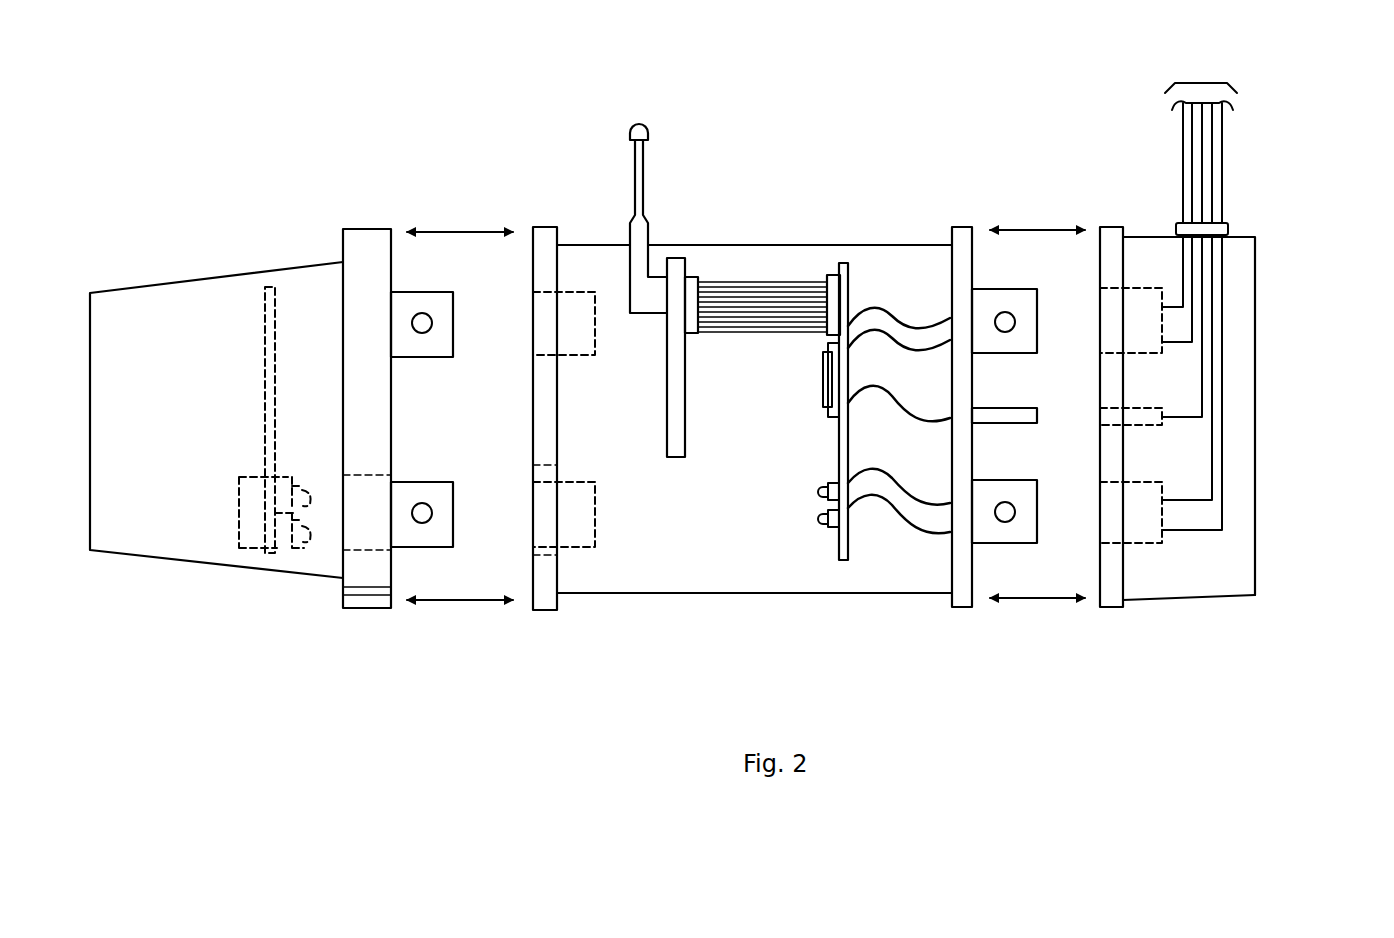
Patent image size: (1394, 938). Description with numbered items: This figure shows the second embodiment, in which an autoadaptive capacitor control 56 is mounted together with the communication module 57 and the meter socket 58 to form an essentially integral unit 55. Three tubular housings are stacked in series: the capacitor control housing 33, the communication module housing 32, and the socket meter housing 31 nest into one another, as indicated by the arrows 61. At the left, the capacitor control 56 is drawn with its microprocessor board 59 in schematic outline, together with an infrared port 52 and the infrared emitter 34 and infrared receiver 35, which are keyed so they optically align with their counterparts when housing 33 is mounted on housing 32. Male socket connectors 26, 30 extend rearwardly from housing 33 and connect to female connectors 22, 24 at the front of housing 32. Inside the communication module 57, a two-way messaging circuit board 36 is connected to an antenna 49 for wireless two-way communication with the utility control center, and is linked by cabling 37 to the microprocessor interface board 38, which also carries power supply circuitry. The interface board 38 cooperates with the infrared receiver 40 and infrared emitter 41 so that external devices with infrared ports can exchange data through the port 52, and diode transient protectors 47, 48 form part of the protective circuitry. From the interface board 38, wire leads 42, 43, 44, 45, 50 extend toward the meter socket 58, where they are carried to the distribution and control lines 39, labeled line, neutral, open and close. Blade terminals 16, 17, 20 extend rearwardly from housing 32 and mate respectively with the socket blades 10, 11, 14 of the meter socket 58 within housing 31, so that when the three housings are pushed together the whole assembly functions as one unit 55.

The socket blade 10 is at (1138, 292).
The socket blade 11 is at (1132, 427).
The socket blade 14 is at (1140, 543).
The blade terminal 16 is at (998, 290).
The blade terminal 17 is at (1015, 408).
The blade terminal 20 is at (998, 480).
The female connector 22 is at (570, 356).
The female connector 24 is at (570, 482).
The male socket connector 26 is at (415, 292).
The male socket connector 30 is at (415, 482).
The tubular housing 31 is at (1258, 573).
The tubular housing 32 is at (767, 245).
The tubular housing 33 is at (367, 228).
The infrared emitter 34 is at (297, 485).
The infrared receiver 35 is at (300, 542).
The two-way messaging circuit board 36 is at (685, 400).
The cabling 37 is at (758, 280).
The interface board 38 is at (848, 432).
The distribution lines and control lines 39 is at (1202, 82).
The infrared receiver 40 is at (820, 490).
The infrared emitter 41 is at (820, 517).
The wire lead 42 is at (910, 350).
The wire lead 43 is at (902, 315).
The wire lead 44 is at (912, 535).
The wire lead 45 is at (903, 488).
The diode transient protector 47 is at (823, 390).
The diode transient protector 48 is at (826, 367).
The antenna 49 is at (643, 182).
The wire lead 50 is at (908, 405).
The infrared port 52 is at (239, 492).
The integral unit 55 is at (697, 238).
The autoadaptive capacitor control 56 is at (205, 562).
The communication module 57 is at (732, 593).
The meter socket 58 is at (1178, 600).
The microprocessor board 59 is at (265, 368).
The arrows 61 is at (452, 230).